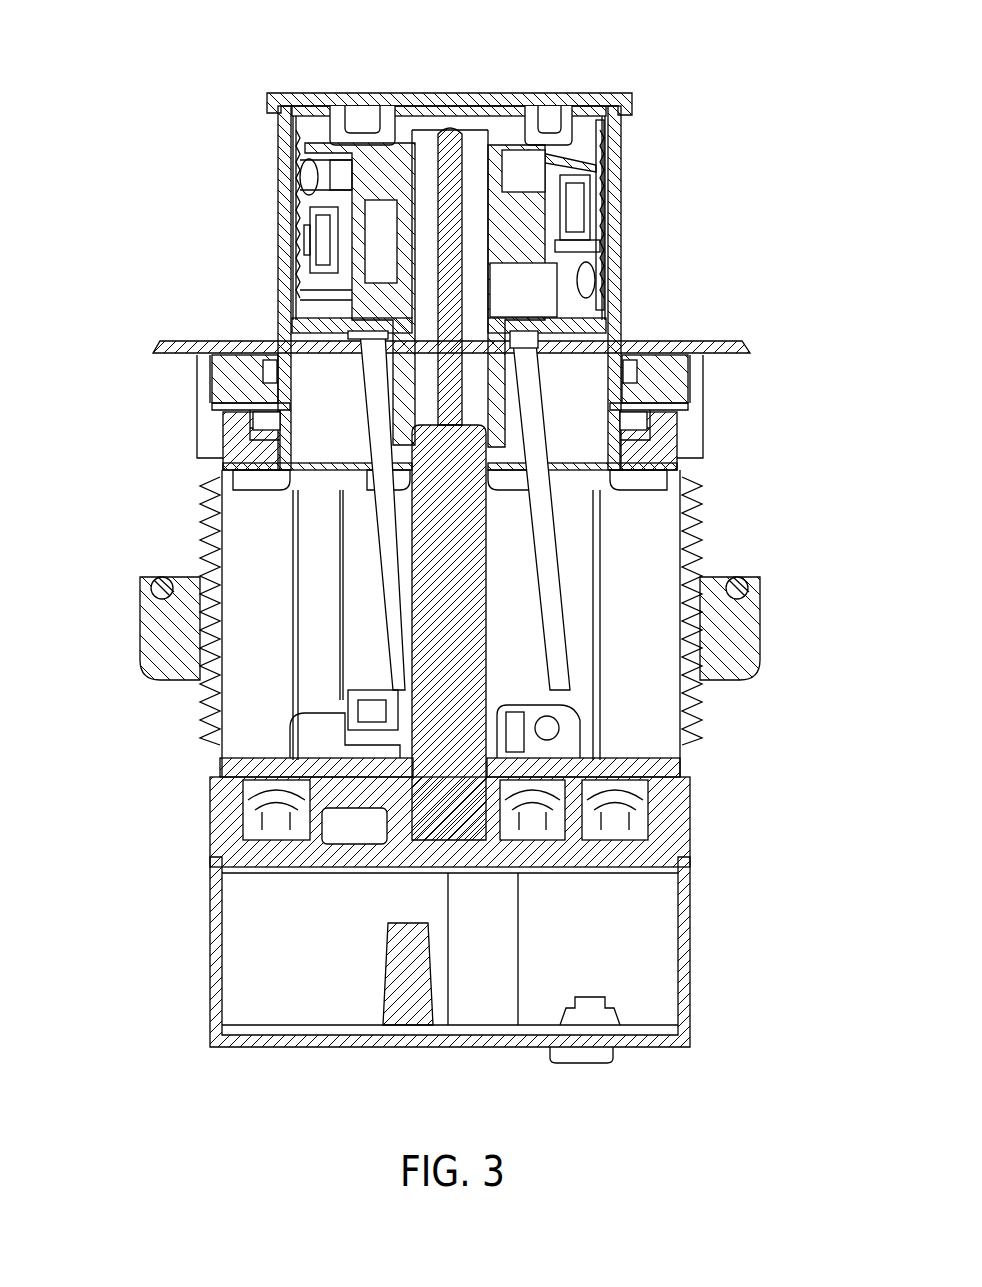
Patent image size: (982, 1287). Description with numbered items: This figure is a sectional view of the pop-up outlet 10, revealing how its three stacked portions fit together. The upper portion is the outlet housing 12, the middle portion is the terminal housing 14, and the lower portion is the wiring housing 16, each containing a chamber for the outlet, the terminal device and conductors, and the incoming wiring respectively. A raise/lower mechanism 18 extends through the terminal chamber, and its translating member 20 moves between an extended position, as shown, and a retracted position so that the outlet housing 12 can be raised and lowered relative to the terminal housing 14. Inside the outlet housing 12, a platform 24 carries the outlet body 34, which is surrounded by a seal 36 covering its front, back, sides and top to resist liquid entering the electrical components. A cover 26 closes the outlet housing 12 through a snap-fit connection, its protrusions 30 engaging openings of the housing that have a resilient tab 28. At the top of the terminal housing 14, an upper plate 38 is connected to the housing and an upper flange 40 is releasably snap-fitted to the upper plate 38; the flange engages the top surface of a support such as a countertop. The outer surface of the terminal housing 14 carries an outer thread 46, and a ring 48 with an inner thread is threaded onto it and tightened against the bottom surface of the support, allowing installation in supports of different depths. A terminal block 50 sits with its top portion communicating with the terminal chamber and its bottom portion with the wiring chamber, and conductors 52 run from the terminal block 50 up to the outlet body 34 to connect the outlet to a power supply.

The pop-up outlet 10 is at (120, 102).
The outlet housing 12 is at (624, 163).
The terminal housing 14 is at (706, 424).
The wiring housing 16 is at (698, 951).
The raise/lower mechanism 18 is at (490, 664).
The translating member 20 is at (450, 386).
The platform 24 is at (522, 323).
The cover 26 is at (503, 107).
The resilient tab 28 is at (547, 136).
The protrusions 30 is at (594, 128).
The outlet body 34 is at (358, 240).
The seal 36 is at (338, 133).
The upper plate 38 is at (228, 378).
The upper flange 40 is at (190, 342).
The outer thread 46 is at (204, 521).
The ring 48 is at (140, 655).
The terminal block 50 is at (696, 821).
The conductors 52 is at (548, 587).